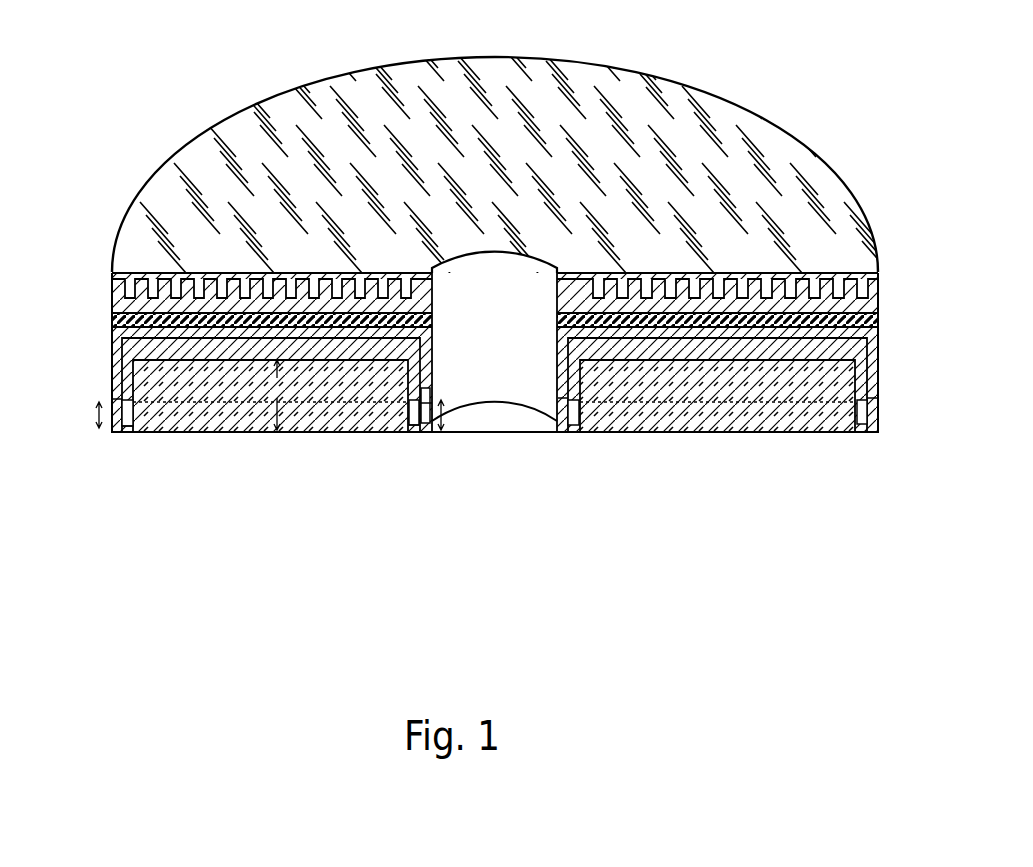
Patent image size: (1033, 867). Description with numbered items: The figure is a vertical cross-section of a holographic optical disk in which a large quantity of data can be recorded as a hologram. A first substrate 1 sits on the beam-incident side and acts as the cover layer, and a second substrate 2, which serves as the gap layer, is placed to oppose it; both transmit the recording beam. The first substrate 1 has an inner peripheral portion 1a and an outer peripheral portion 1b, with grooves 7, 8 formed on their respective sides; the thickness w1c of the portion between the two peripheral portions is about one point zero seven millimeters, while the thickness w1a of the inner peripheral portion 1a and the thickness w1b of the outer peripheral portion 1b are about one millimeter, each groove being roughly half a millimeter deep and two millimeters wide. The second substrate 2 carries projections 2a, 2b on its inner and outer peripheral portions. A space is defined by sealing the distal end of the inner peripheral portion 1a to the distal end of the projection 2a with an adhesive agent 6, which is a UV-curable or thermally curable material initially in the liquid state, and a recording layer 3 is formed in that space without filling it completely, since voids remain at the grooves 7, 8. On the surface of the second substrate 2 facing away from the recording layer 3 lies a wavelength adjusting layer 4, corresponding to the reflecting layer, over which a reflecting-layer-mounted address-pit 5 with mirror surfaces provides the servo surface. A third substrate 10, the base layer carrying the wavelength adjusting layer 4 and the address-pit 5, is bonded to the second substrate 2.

The first substrate 1 is at (150, 432).
The inner peripheral portion 1a is at (423, 432).
The outer peripheral portion 1b is at (115, 432).
The second substrate 2 is at (112, 338).
The projection 2a is at (432, 345).
The projection 2b is at (112, 378).
The recording layer 3 is at (221, 352).
The wavelength adjusting layer 4 is at (647, 317).
The reflecting-layer-mounted address-pit 5 is at (707, 297).
The adhesive agent 6 is at (126, 398).
The groove 7 is at (127, 432).
The groove 8 is at (411, 429).
The third substrate 10 is at (608, 102).
The thickness of the inner peripheral portion w1a is at (443, 420).
The thickness of the outer peripheral portion w1b is at (74, 416).
The thickness of the portion between the inner and outer peripheral portions w1c is at (279, 395).